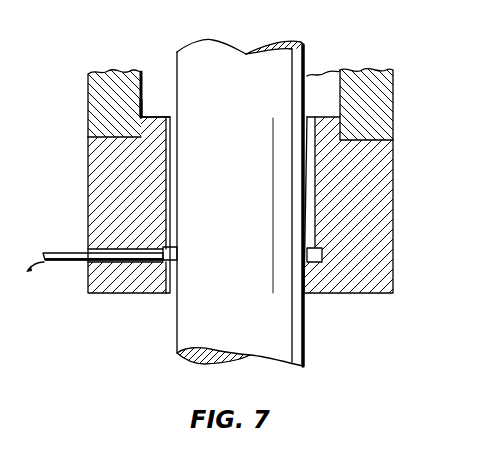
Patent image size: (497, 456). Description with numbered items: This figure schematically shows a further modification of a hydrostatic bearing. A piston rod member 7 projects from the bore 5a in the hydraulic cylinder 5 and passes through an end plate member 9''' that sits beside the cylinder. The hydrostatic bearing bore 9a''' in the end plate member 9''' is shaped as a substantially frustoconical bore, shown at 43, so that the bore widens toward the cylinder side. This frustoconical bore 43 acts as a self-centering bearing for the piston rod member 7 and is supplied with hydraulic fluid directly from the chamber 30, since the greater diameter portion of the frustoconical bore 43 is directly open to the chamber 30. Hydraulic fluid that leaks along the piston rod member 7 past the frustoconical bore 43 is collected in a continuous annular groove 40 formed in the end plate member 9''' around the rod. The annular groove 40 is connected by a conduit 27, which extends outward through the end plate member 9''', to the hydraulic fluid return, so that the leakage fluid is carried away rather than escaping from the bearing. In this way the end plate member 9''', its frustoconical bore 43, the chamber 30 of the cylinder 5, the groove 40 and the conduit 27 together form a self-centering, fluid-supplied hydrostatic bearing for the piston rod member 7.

The piston rod member 7 is at (246, 58).
The chamber 30 is at (158, 80).
The hydraulic cylinder 5 is at (103, 90).
The bore 5a is at (143, 106).
The end plate member 9''' is at (104, 205).
The hydrostatic bearing bore 9a''' is at (344, 158).
The frustoconical bore 43 is at (315, 171).
The continuous annular groove 40 is at (176, 257).
The conduit 27 is at (76, 261).